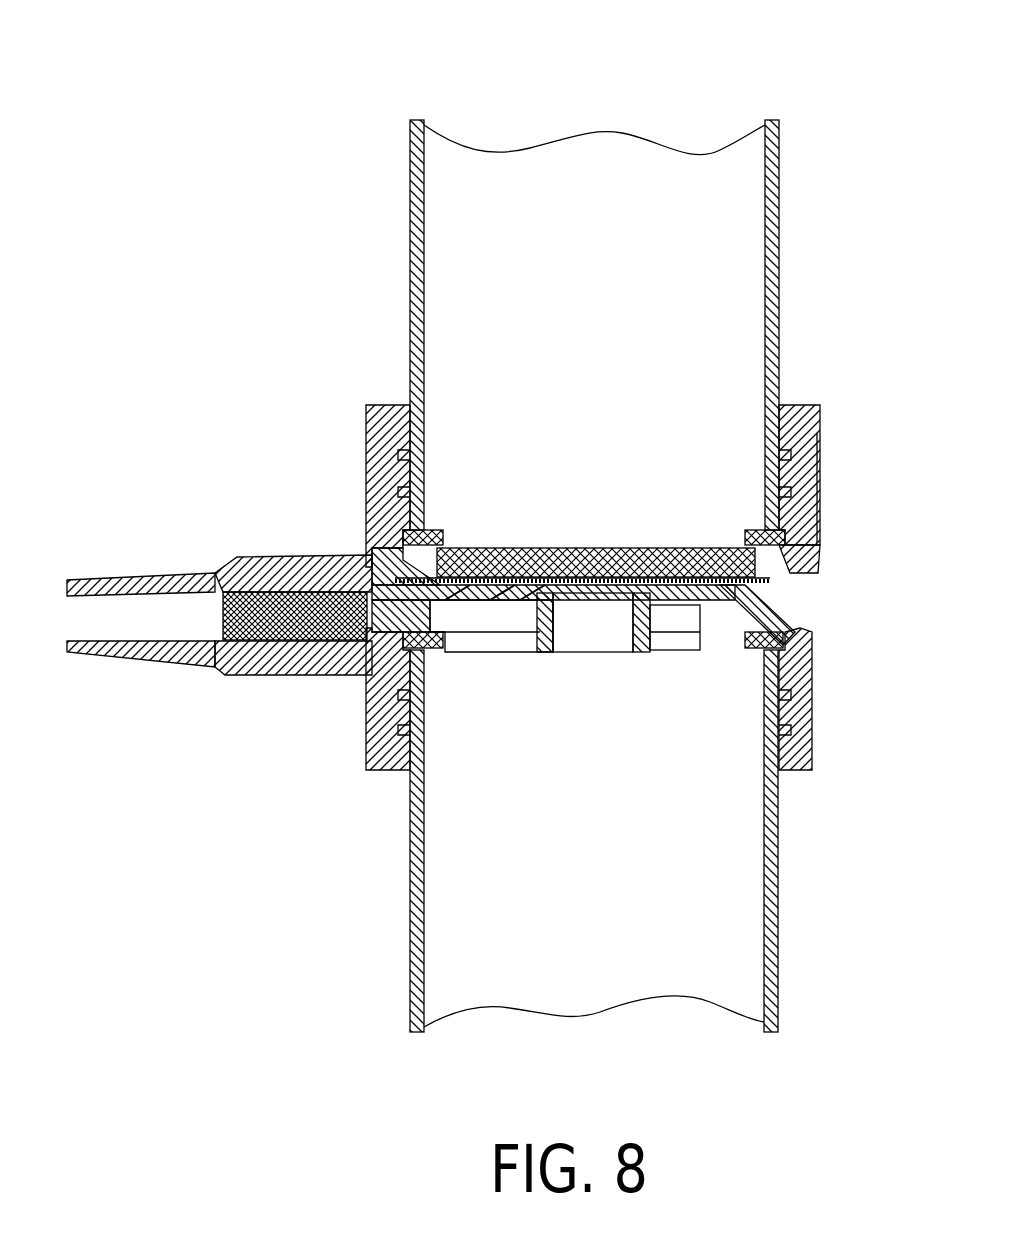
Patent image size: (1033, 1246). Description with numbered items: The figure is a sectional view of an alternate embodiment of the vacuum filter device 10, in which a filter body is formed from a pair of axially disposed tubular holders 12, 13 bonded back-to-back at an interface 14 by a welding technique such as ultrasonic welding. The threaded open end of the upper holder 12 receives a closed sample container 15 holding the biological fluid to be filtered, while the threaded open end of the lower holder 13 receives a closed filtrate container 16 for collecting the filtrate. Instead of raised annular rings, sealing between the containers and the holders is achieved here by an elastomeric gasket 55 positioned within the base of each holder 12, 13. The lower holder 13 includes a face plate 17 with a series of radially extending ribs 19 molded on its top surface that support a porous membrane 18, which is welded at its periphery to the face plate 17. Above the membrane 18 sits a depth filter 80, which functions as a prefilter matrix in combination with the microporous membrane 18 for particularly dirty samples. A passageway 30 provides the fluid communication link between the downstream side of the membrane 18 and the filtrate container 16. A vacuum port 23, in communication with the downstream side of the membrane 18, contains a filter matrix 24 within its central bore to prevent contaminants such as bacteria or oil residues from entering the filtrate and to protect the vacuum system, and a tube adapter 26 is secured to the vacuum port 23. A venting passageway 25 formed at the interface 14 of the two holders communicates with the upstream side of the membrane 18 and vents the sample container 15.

The vacuum filter device 10 is at (290, 116).
The tubular holder 12 is at (822, 445).
The tubular holder 13 is at (812, 758).
The interface 14 is at (375, 546).
The sample container 15 is at (779, 208).
The filtrate container 16 is at (780, 934).
The face plate 17 is at (725, 590).
The porous membrane 18 is at (812, 548).
The ribs 19 is at (547, 597).
The vacuum port 23 is at (290, 653).
The filter matrix 24 is at (217, 618).
The venting passageway 25 is at (792, 584).
The tube adapter 26 is at (327, 682).
The passageway 30 is at (608, 652).
The elastomeric gasket 55 is at (428, 528).
The depth filter 80 is at (665, 548).